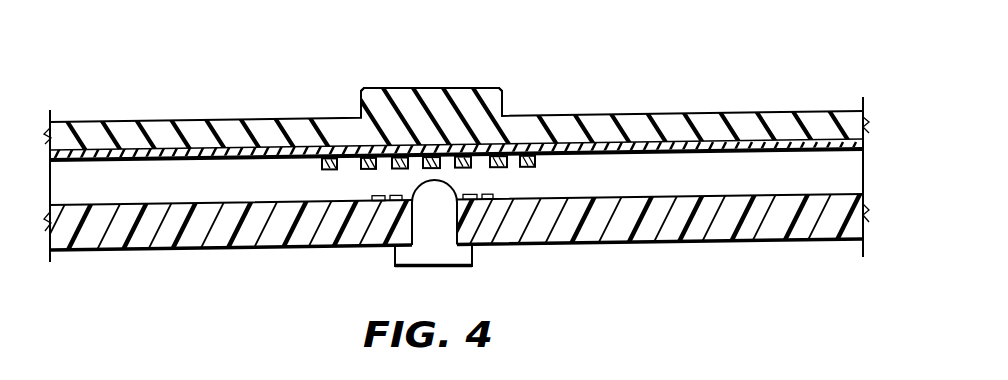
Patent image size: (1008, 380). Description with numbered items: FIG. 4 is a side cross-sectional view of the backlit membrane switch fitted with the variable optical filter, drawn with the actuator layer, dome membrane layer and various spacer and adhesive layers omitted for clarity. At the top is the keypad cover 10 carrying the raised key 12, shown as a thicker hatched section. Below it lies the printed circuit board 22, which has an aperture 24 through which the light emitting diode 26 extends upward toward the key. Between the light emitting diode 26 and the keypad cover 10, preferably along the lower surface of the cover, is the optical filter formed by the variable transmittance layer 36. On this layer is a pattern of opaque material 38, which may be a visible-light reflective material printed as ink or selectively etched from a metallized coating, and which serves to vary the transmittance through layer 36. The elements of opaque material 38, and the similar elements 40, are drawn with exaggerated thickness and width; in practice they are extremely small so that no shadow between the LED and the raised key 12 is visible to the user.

The keypad cover 10 is at (258, 121).
The raised key 12 is at (482, 88).
The printed circuit board 22 is at (637, 246).
The aperture 24 is at (393, 247).
The light emitting diode 26 is at (473, 260).
The variable transmittance layer 36 is at (580, 153).
The opaque material 38 is at (498, 168).
The contact pad 40 is at (428, 169).